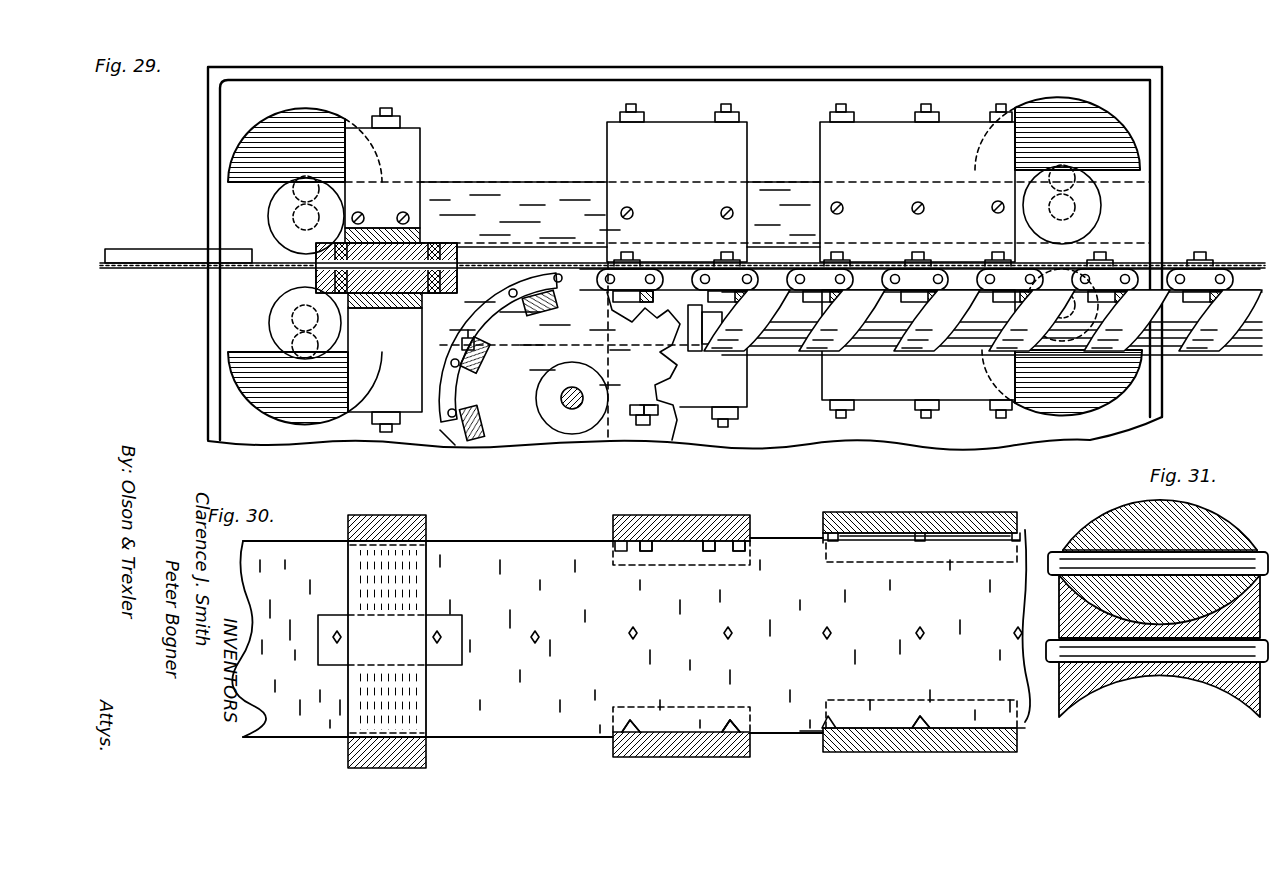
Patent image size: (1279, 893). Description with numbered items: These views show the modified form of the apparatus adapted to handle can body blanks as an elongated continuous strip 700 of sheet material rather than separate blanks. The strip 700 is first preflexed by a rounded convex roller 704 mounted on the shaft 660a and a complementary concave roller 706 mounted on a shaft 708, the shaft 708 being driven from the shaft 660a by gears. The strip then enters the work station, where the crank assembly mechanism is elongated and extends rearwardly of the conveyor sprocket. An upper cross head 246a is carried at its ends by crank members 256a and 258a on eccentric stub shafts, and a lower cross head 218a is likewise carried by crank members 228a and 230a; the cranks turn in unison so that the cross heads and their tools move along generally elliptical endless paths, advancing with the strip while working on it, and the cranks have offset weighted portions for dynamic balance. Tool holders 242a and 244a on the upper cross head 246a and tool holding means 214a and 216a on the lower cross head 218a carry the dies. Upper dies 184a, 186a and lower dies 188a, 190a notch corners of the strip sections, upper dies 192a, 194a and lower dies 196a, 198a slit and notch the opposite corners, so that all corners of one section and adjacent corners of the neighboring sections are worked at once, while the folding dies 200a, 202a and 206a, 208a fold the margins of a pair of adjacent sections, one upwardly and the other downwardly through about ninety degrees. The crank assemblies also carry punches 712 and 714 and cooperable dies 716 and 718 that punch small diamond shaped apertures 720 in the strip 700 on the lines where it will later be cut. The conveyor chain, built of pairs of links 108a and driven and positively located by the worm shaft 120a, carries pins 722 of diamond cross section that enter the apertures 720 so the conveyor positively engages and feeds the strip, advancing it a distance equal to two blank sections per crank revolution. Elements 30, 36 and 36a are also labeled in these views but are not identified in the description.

In FIG. 29, the roller 30 is at (270, 229).
In FIG. 30, the clamp block 36 is at (878, 693).
In FIG. 30, the clamp block 36a is at (680, 686).
In FIG. 29, the links 108a is at (476, 430).
In FIG. 29, the worm shaft 120a is at (790, 355).
In FIG. 30, the upper die 184a is at (612, 755).
In FIG. 30, the upper die 186a is at (755, 690).
In FIG. 30, the lower die 188a is at (632, 726).
In FIG. 30, the lower die 190a is at (733, 725).
In FIG. 30, the upper die 192a is at (634, 540).
In FIG. 30, the upper die 194a is at (733, 548).
In FIG. 30, the lower die 196a is at (641, 550).
In FIG. 30, the lower die 198a is at (736, 550).
In FIG. 30, the upper die 200a is at (1000, 745).
In FIG. 30, the lower die 202a is at (958, 728).
In FIG. 30, the upper die member 206a is at (950, 515).
In FIG. 30, the lower die member 208a is at (972, 560).
In FIG. 29, the tool holding means 214a is at (735, 395).
In FIG. 29, the tool holding means 216a is at (960, 398).
In FIG. 29, the cross head 218a is at (523, 353).
In FIG. 29, the crank member 228a is at (250, 398).
In FIG. 29, the crank member 230a is at (1135, 388).
In FIG. 29, the tool holder 242a is at (678, 118).
In FIG. 29, the tool holder 244a is at (872, 122).
In FIG. 29, the cross head 246a is at (503, 180).
In FIG. 29, the crank member 256a is at (332, 105).
In FIG. 29, the crank member 258a is at (1072, 97).
In FIG. 31, the shaft 660a is at (1060, 550).
In FIG. 29, the strip 700 is at (165, 272).
In FIG. 30, the strip 700 is at (509, 742).
In FIG. 31, the strip 700 is at (1205, 612).
In FIG. 31, the convex roller 704 is at (1205, 522).
In FIG. 31, the concave roller 706 is at (1115, 682).
In FIG. 31, the shaft 708 is at (1050, 665).
In FIG. 30, the punch 712 is at (334, 630).
In FIG. 29, the punch 714 is at (468, 336).
In FIG. 30, the punch 714 is at (439, 630).
In FIG. 29, the die 716 is at (363, 302).
In FIG. 29, the die 718 is at (378, 245).
In FIG. 30, the apertures 720 is at (533, 630).
In FIG. 29, the pins 722 is at (720, 262).